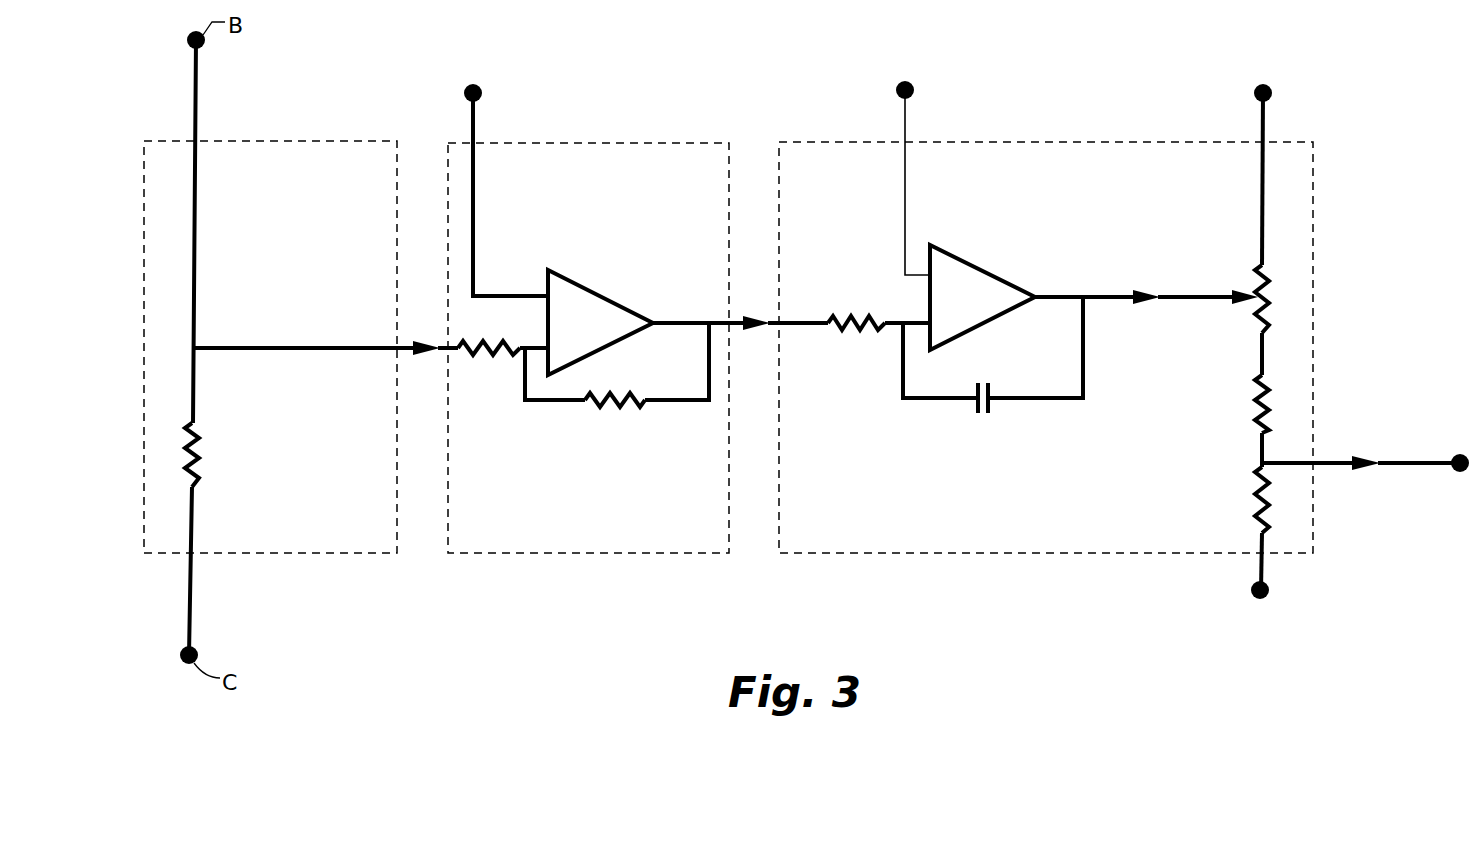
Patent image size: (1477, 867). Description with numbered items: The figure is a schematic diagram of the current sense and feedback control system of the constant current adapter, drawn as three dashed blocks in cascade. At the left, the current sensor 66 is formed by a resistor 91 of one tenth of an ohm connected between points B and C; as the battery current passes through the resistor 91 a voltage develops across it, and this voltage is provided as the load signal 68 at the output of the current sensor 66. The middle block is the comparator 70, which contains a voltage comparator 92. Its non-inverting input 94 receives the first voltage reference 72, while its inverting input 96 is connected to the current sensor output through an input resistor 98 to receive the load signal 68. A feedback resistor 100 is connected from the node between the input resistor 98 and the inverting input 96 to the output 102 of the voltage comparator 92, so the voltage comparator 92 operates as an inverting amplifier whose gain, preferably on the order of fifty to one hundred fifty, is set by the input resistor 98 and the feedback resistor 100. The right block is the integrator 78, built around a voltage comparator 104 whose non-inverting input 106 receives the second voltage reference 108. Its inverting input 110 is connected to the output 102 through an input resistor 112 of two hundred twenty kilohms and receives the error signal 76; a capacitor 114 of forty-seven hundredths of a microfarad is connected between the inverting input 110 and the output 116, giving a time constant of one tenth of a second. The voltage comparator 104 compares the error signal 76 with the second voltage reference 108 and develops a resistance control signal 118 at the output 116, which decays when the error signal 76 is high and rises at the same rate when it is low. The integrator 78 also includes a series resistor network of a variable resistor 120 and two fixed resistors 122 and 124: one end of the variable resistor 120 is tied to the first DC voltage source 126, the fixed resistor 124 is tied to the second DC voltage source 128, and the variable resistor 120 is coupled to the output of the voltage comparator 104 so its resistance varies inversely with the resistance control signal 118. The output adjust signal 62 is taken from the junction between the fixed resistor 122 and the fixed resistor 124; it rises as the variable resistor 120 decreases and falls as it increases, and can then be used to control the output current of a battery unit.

The output adjust signal 62 is at (1372, 455).
The current sensor 66 is at (253, 141).
The load signal 68 is at (428, 352).
The comparator 70 is at (595, 143).
The voltage reference VREF1 72 is at (478, 82).
The error signal 76 is at (756, 329).
The integrator 78 is at (1053, 142).
The resistor 91 is at (194, 428).
The voltage comparator 92 is at (587, 285).
The non-inverting input 94 is at (546, 294).
The inverting input 96 is at (543, 345).
The input resistor 98 is at (488, 353).
The feedback resistor 100 is at (626, 406).
The output 102 is at (663, 320).
The voltage comparator 104 is at (973, 262).
The non-inverting input 106 is at (920, 272).
The voltage reference VREF2 108 is at (910, 76).
The inverting input 110 is at (920, 325).
The input resistor 112 is at (875, 330).
The capacitor 114 is at (990, 390).
The output 116 is at (1060, 280).
The resistance control signal 118 is at (1138, 290).
The variable resistor 120 is at (1265, 285).
The fixed resistor 122 is at (1260, 400).
The fixed resistor 124 is at (1260, 495).
The DC voltage source VDC1 126 is at (1263, 83).
The DC voltage source VDC2 128 is at (1255, 600).